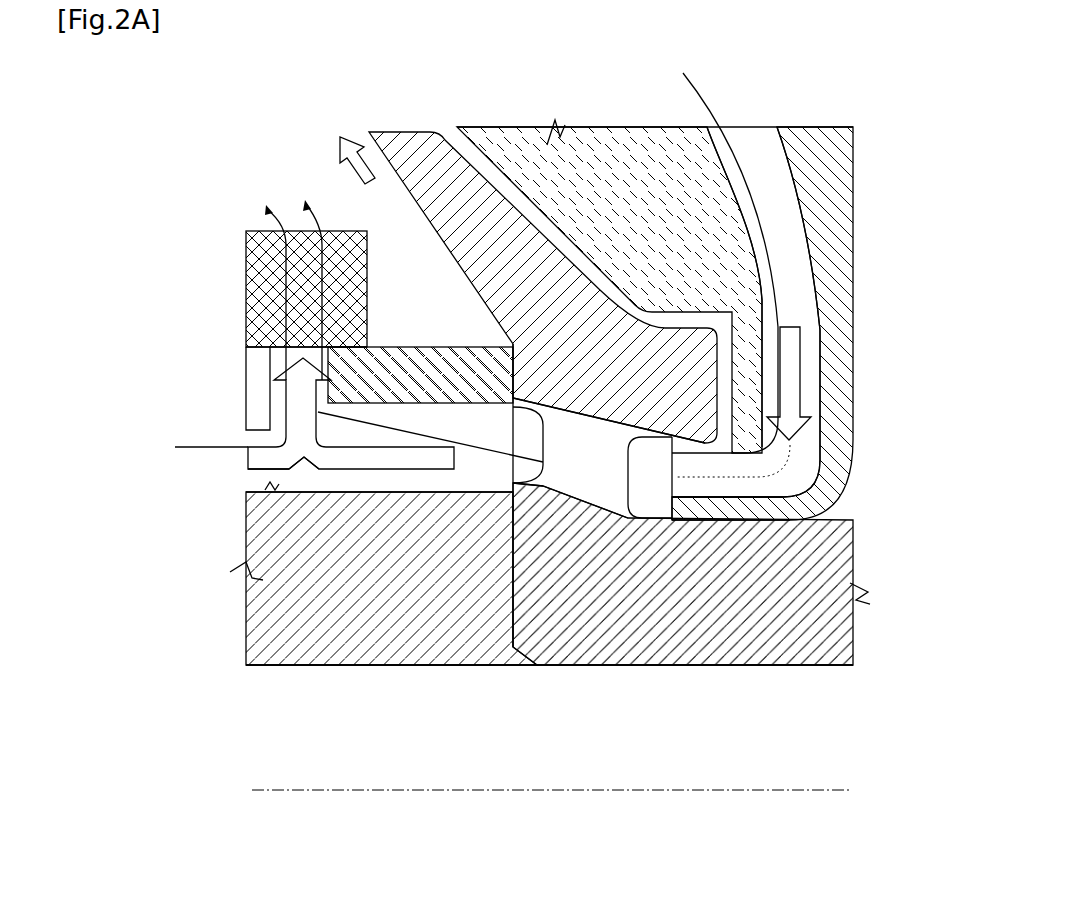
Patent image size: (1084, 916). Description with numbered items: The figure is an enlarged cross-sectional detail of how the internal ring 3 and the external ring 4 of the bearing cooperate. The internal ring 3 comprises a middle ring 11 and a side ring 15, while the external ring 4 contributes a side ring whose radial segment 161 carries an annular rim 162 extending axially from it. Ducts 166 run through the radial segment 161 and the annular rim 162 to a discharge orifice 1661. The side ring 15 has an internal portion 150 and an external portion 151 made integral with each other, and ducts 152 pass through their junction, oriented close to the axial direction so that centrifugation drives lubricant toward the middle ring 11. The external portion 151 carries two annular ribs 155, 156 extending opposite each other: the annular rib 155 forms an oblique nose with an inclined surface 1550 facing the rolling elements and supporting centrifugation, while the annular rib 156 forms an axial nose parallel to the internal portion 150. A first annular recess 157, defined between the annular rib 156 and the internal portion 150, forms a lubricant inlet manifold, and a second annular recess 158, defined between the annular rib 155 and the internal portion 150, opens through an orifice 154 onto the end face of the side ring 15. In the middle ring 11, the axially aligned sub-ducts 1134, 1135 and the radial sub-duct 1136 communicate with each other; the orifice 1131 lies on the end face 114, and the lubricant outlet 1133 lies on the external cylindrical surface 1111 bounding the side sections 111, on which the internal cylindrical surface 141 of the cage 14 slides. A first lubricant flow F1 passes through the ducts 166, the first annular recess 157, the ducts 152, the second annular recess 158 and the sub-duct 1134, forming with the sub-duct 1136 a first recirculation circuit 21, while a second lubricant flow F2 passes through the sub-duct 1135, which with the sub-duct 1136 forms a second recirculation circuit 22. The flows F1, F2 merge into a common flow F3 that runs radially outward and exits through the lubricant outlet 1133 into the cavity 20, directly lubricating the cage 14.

The external ring 4 is at (853, 84).
The internal ring 3 is at (868, 625).
The middle ring 11 is at (455, 665).
The side sections 111 is at (385, 612).
The end face 114 is at (477, 478).
The orifice 1131 is at (413, 478).
The lubricant outlet 1133 is at (295, 383).
The sub-duct 1134 is at (455, 442).
The sub-duct 1135 is at (268, 495).
The sub-duct 1136 is at (247, 403).
The external cylindrical surface 1111 is at (410, 347).
The cage 14 is at (247, 259).
The internal cylindrical surface 141 is at (250, 360).
The side ring 15 is at (543, 665).
The internal portion 150 is at (835, 625).
The external portion 151 is at (550, 172).
The ducts 152 is at (564, 462).
The orifice 154 is at (510, 475).
The annular rib 155 is at (442, 206).
The inclined surface 1550 is at (373, 160).
The annular rib 156 is at (662, 372).
The first annular recess 157 is at (633, 469).
The second annular recess 158 is at (522, 401).
The radial segment 161 is at (835, 385).
The annular rim 162 is at (735, 505).
The discharge orifice 1661 is at (660, 485).
The ducts 166 is at (786, 268).
The cavity 20 is at (395, 287).
The first lubricant recirculation circuit 21 is at (712, 102).
The second lubricant recirculation circuit 22 is at (273, 278).
The first lubricant flow F1 is at (808, 391).
The second lubricant flow F2 is at (267, 467).
The common lubricant flow F3 is at (282, 410).